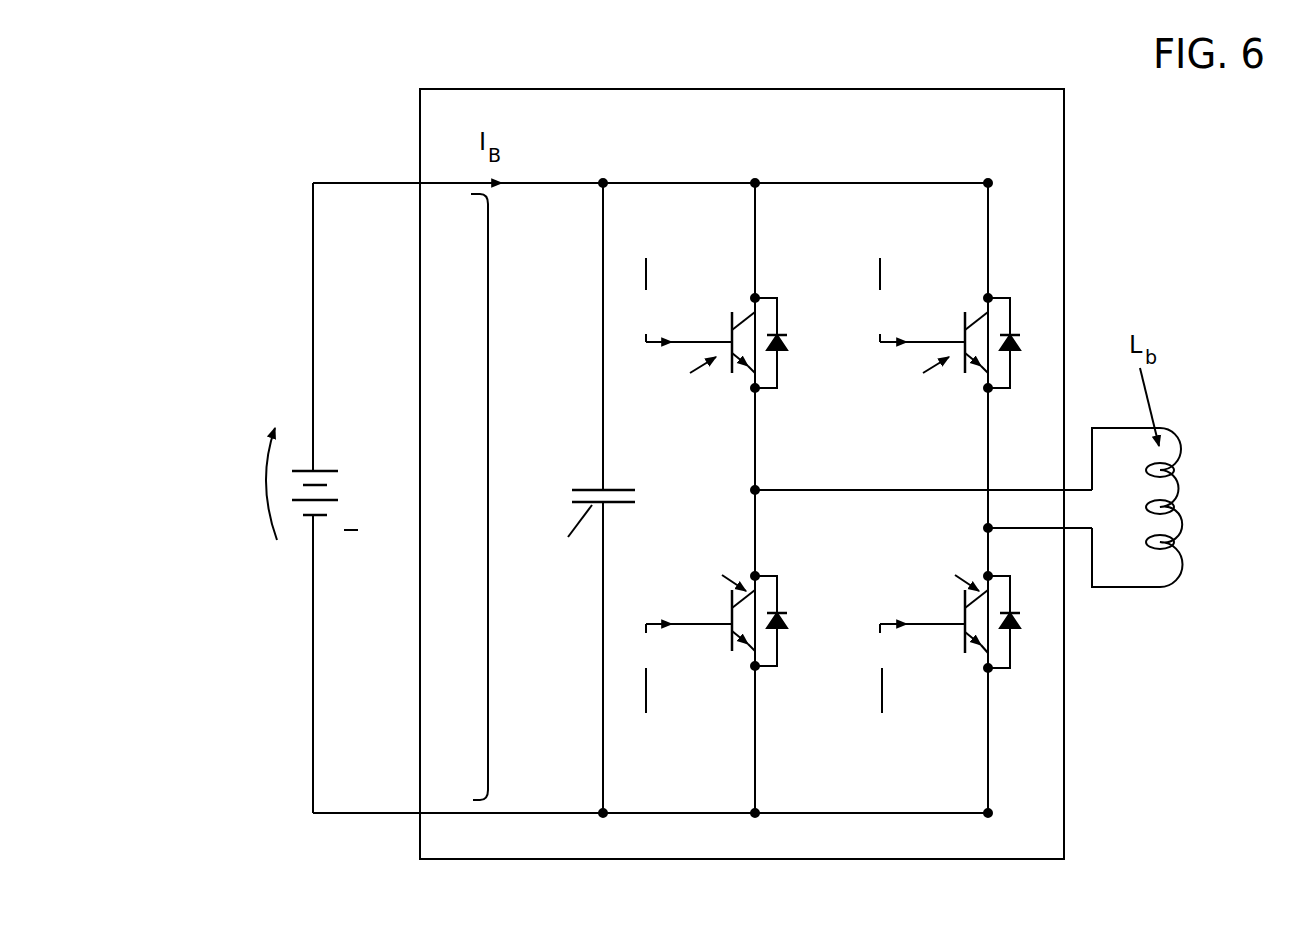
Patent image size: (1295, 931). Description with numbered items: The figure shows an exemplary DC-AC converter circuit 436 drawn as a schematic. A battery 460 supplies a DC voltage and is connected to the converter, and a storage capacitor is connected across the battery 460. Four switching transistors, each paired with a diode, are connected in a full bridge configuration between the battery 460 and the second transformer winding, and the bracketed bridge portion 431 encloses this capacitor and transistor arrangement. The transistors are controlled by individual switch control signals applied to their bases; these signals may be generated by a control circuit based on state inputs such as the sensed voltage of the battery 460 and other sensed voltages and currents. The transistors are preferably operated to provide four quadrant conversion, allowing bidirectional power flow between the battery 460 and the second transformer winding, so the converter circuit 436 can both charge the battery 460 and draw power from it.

The DC-AC converter circuit 436 is at (970, 88).
The full-bridge switching circuit 431 is at (488, 497).
The battery 460 is at (290, 530).